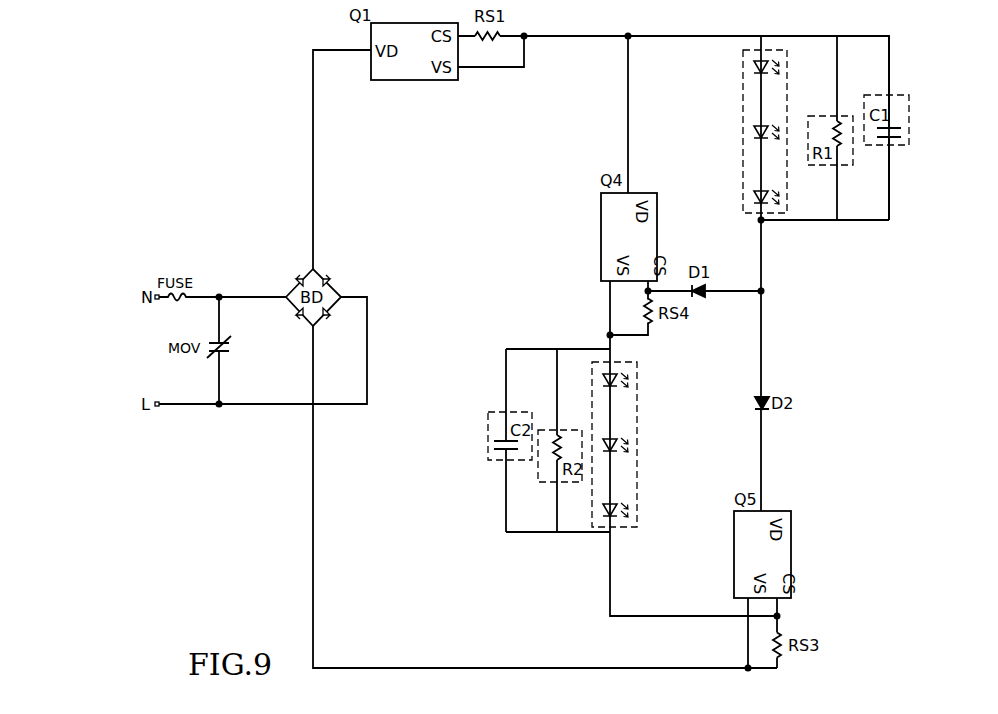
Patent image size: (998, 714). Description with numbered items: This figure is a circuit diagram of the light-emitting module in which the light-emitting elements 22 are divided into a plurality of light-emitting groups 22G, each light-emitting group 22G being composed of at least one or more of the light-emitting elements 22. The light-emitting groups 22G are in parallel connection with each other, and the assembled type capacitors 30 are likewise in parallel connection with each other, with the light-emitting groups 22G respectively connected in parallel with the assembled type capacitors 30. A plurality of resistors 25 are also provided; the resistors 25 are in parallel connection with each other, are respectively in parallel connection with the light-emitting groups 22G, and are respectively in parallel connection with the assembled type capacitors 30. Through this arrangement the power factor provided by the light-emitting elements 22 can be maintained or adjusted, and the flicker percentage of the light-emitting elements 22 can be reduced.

The light-emitting element 22 is at (739, 132).
The light-emitting group 22G is at (689, 288).
The resistor 25 is at (698, 263).
The assembled type capacitor 30 is at (699, 248).